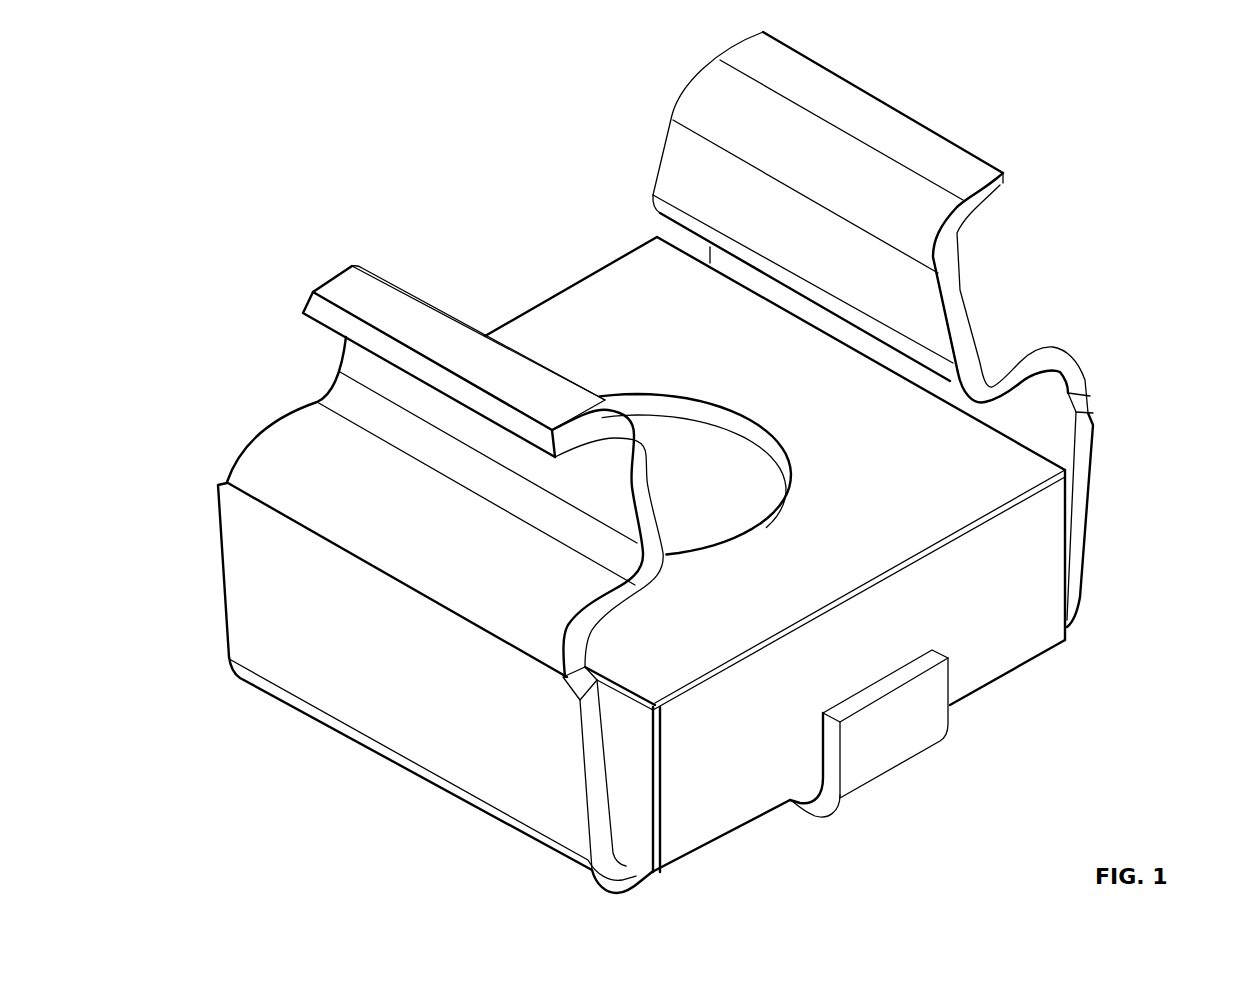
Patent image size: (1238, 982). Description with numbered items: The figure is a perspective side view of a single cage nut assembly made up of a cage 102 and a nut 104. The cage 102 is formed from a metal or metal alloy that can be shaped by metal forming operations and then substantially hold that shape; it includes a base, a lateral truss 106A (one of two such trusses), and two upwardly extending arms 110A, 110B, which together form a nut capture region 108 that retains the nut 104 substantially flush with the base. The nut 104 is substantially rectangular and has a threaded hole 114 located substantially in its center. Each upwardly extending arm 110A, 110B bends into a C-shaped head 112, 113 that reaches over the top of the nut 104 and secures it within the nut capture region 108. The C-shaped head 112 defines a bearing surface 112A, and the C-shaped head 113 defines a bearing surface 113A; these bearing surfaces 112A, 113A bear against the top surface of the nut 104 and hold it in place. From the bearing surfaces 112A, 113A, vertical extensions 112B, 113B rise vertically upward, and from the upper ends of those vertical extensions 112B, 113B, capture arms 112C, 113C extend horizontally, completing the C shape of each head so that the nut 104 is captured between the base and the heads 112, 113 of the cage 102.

The cage 102 is at (1096, 556).
The nut 104 is at (1013, 658).
The lateral truss 106A is at (905, 742).
The nut capture region 108 is at (620, 193).
The upwardly extending arm 110A is at (1093, 450).
The upwardly extending arm 110B is at (451, 762).
The C-shaped head 112 is at (1010, 139).
The bearing surface 112A is at (1020, 337).
The vertical extension 112B is at (950, 287).
The capture arm 112C is at (1003, 183).
The C-shaped head 113 is at (337, 266).
The bearing surface 113A is at (298, 425).
The vertical extension 113B is at (363, 368).
The capture arm 113C is at (382, 303).
The threaded hole 114 is at (717, 481).